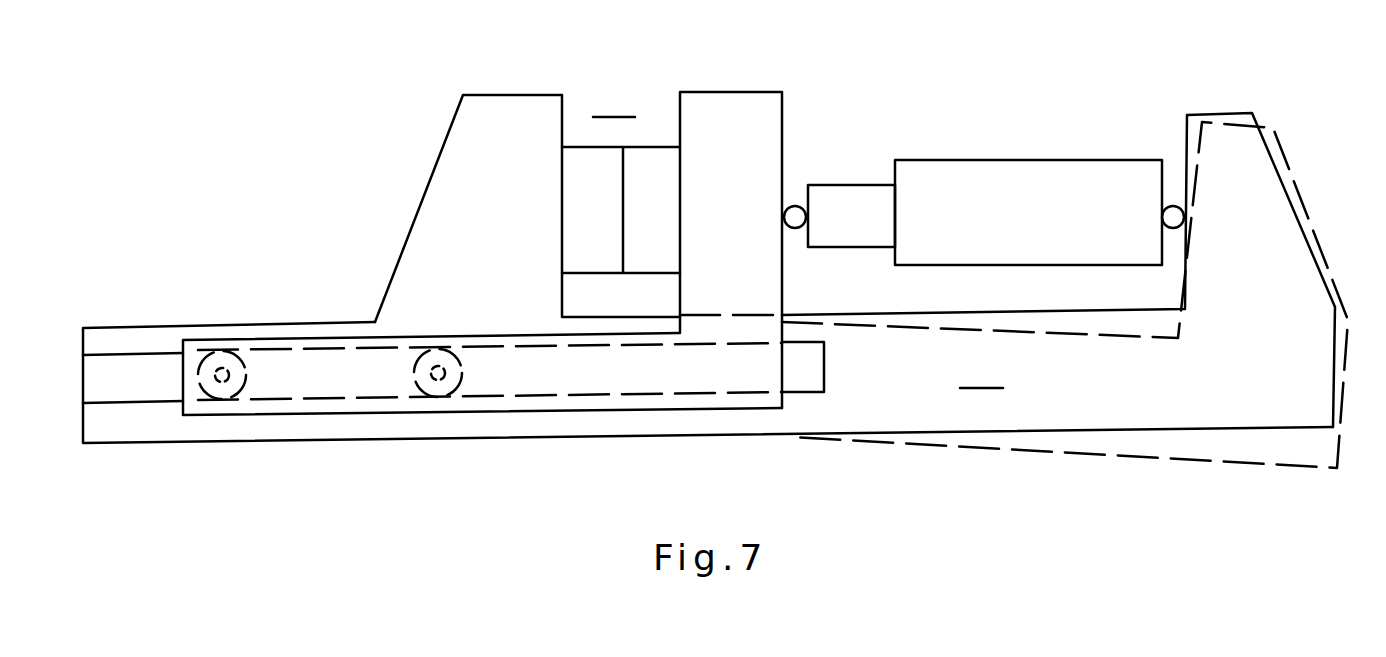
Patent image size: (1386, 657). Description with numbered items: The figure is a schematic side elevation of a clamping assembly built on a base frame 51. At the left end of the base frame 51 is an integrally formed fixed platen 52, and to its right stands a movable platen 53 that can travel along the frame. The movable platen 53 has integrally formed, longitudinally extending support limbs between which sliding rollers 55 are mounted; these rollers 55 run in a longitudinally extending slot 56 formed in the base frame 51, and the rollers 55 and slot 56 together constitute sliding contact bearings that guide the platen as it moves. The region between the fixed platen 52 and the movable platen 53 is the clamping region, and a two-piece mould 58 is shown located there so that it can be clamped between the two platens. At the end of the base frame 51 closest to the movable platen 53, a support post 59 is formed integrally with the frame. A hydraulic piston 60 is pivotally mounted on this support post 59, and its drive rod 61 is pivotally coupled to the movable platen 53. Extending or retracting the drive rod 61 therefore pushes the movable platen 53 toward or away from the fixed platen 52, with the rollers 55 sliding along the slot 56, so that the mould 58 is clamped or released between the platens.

The base frame 51 is at (120, 372).
The fixed platen 52 is at (508, 103).
The movable platen 53 is at (727, 102).
The sliding rollers 55 is at (222, 372).
The slot 56 is at (343, 383).
The two-piece mould 58 is at (617, 142).
The support post 59 is at (1257, 187).
The hydraulic piston 60 is at (1008, 170).
The drive rod 61 is at (843, 195).